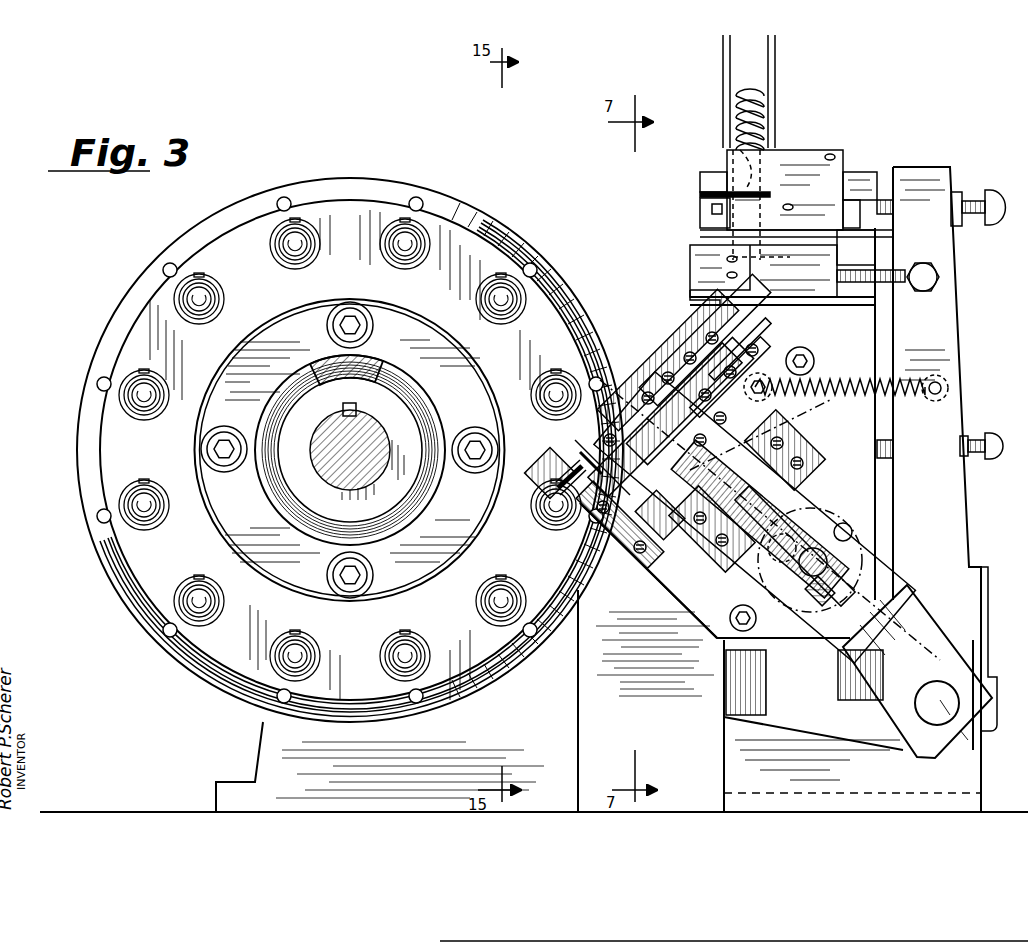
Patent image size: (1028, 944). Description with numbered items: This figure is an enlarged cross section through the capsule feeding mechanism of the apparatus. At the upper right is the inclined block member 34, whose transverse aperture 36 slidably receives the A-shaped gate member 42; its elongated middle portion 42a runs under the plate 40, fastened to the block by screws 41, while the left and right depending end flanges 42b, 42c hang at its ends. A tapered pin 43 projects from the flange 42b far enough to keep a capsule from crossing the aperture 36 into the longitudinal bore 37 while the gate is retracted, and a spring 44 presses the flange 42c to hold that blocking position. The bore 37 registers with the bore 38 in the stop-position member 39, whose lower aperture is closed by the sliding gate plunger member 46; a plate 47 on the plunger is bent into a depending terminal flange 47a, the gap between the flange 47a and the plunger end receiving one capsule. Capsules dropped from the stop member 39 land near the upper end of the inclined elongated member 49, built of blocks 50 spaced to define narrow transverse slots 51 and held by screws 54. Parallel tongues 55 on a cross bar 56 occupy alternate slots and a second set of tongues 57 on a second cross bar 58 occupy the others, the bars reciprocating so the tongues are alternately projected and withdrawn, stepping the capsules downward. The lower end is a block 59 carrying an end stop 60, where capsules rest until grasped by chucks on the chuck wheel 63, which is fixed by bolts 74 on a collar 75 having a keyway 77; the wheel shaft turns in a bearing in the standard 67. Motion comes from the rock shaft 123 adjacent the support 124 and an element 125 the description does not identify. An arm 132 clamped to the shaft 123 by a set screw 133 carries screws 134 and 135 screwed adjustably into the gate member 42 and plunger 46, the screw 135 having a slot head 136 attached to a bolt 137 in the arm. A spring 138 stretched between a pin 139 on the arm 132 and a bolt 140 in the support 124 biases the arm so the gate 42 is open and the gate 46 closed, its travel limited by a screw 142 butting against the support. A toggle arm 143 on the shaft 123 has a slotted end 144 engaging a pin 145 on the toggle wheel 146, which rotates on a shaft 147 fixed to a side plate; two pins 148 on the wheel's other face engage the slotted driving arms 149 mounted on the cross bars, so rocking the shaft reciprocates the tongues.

The block member 34 is at (762, 140).
The transverse aperture 36 is at (738, 176).
The longitudinal bore 37 is at (745, 222).
The bore 38 is at (766, 257).
The stop-position member 39 is at (856, 247).
The plate 40 is at (796, 160).
The screws 41 is at (830, 154).
The gate member 42 is at (698, 195).
The middle portion 42a is at (700, 182).
The left depending end flange 42b is at (702, 220).
The right depending end flange 42c is at (893, 212).
The tapered pin 43 is at (712, 209).
The spring 44 is at (860, 189).
The gate plunger member 46 is at (800, 281).
The plate 47 is at (700, 270).
The depending terminal flange 47a is at (690, 295).
The inclined elongated member 49 is at (690, 345).
The blocks 50 is at (578, 440).
The transverse slots 51 is at (693, 378).
The screws 54 is at (600, 446).
The tongues 55 is at (700, 325).
The cross bar 56 is at (735, 380).
The second set of tongues 57 is at (673, 443).
The second cross bar 58 is at (680, 500).
The block 59 is at (625, 548).
The end stop 60 is at (548, 480).
The chuck wheel 63 is at (535, 292).
The standard 67 is at (262, 748).
The bolts 74 is at (480, 440).
The collar 75 is at (458, 358).
The keyway 77 is at (355, 403).
The rock shaft 123 is at (932, 690).
The support 124 is at (780, 554).
The pivot block 125 is at (917, 671).
The arm 132 is at (928, 489).
The set screw 133 is at (992, 680).
The screw 134 is at (972, 200).
The screw 135 is at (880, 272).
The slot head 136 is at (935, 265).
The bolt 137 is at (937, 277).
The spring 138 is at (815, 372).
The pin 139 is at (948, 378).
The bolt 140 is at (762, 372).
The screw 142 is at (975, 438).
The toggle arm 143 is at (870, 588).
The slot 144 is at (778, 498).
The pin 145 is at (768, 565).
The toggle wheel 146 is at (862, 562).
The shaft 147 is at (800, 598).
The pins 148 is at (840, 502).
The driving arms 149 is at (712, 545).